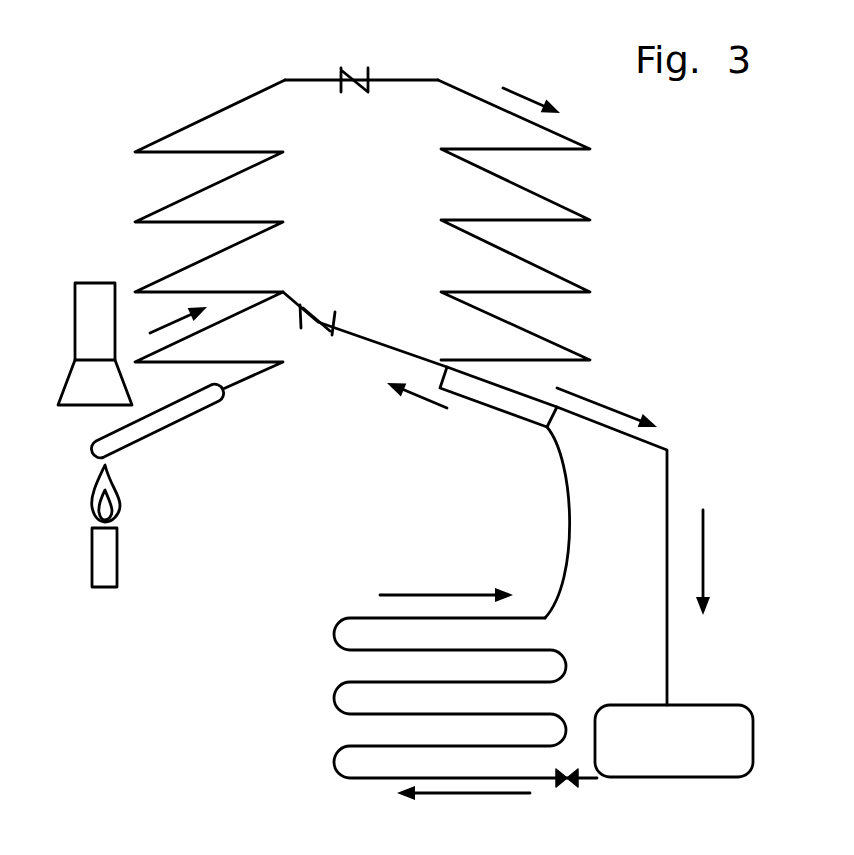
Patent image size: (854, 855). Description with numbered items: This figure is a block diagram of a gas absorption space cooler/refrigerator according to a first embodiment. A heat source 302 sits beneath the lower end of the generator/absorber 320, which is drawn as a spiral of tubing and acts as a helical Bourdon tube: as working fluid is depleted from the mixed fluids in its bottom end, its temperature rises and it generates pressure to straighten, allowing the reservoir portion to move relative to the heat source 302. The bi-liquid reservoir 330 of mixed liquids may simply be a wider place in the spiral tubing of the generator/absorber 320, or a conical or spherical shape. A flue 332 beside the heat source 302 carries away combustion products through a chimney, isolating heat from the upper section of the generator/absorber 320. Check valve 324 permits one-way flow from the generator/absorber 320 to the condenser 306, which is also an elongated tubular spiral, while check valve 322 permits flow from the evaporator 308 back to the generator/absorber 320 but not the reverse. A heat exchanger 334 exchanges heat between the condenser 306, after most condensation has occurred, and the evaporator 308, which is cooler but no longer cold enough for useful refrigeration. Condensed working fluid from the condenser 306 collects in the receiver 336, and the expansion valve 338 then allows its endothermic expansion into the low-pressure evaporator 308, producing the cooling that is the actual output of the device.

The heat source 302 is at (107, 548).
The condenser 306 is at (560, 203).
The evaporator 308 is at (333, 692).
The generator/absorber 320 is at (176, 130).
The check valve 322 is at (329, 333).
The check valve 324 is at (343, 67).
The bi-liquid reservoir 330 is at (170, 417).
The flue 332 is at (88, 323).
The heat exchanger 334 is at (480, 390).
The receiver 336 is at (733, 702).
The expansion valve 338 is at (563, 787).